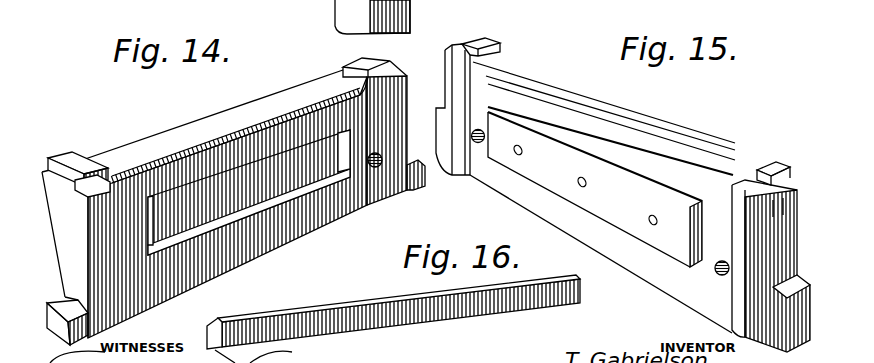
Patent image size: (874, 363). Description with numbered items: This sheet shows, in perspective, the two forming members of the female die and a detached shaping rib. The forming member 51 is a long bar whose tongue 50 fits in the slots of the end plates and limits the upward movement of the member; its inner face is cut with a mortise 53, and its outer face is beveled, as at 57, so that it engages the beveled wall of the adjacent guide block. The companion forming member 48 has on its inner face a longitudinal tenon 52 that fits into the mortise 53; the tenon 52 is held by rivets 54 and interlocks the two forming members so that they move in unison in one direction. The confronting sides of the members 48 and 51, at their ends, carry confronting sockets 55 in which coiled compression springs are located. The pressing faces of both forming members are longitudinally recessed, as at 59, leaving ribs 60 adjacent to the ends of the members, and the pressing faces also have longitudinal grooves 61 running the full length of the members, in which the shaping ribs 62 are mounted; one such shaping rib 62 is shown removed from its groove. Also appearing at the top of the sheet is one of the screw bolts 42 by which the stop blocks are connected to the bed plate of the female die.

In FIG. 14, the screw bolts 42 is at (350, 14).
In FIG. 15, the forming member 48 is at (612, 257).
In FIG. 14, the tongue 50 is at (417, 182).
In FIG. 14, the forming member 51 is at (340, 212).
In FIG. 15, the longitudinal tenon 52 is at (595, 189).
In FIG. 14, the mortise 53 is at (226, 178).
In FIG. 15, the rivets 54 is at (577, 185).
In FIG. 15, the sockets 55 is at (481, 129).
In FIG. 14, the beveled outer face 57 is at (42, 198).
In FIG. 15, the longitudinal recess 59 is at (730, 160).
In FIG. 14, the ribs 60 is at (70, 158).
In FIG. 15, the ribs 60 is at (768, 172).
In FIG. 15, the longitudinal grooves 61 is at (673, 143).
In FIG. 16, the shaping rib 62 is at (470, 307).